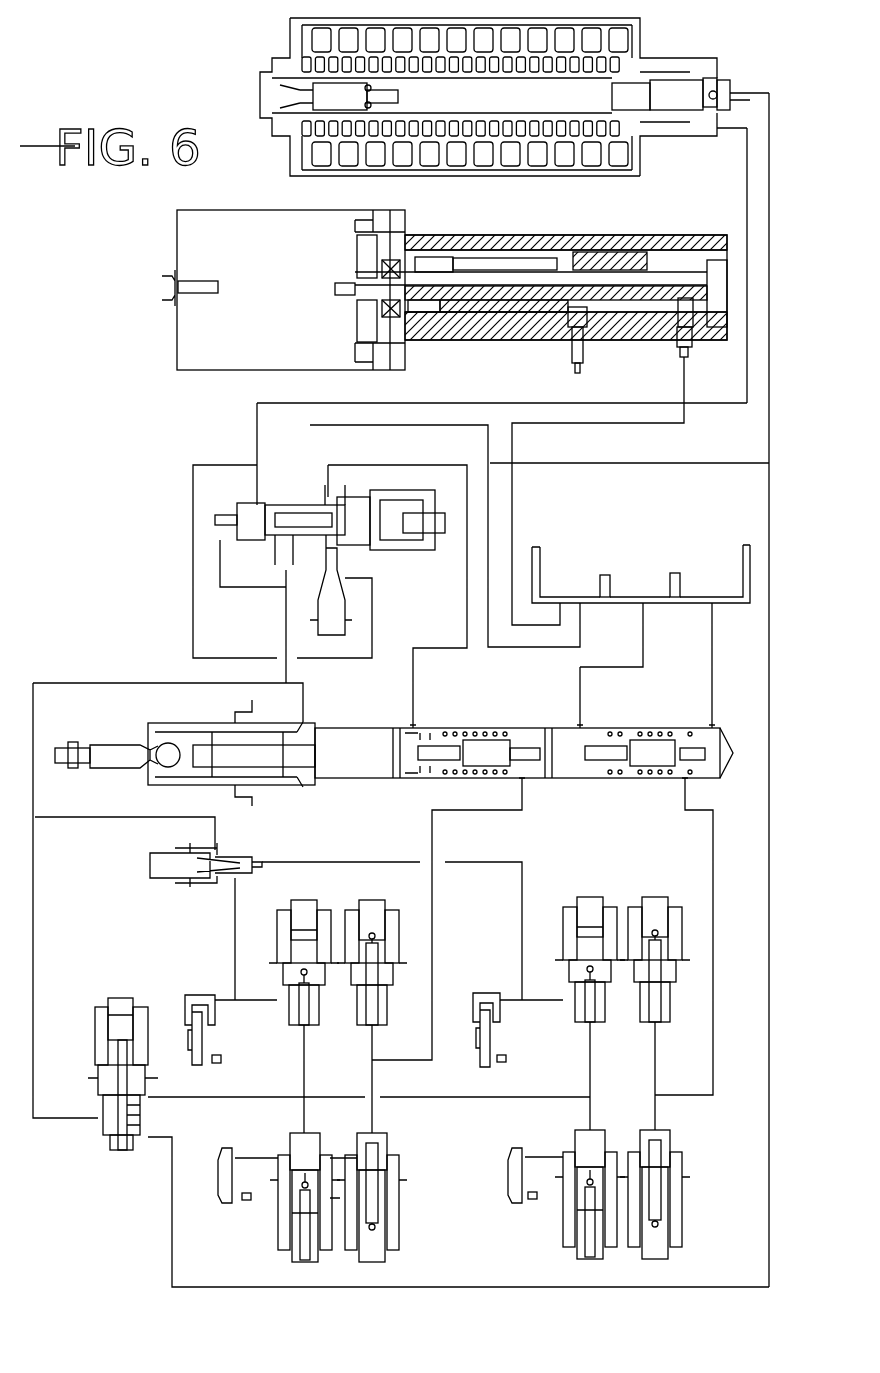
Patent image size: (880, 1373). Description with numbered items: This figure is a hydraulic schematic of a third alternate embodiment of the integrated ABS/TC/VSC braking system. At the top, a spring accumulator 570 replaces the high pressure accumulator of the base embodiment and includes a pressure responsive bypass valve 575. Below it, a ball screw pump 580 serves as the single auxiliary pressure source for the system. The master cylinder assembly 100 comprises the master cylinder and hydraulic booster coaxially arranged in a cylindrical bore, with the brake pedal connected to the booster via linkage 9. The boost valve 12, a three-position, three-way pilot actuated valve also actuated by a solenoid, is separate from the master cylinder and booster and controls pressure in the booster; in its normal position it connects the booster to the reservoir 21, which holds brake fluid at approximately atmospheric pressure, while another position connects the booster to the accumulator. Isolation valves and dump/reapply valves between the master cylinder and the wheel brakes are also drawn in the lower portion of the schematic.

The spring accumulator 570 is at (292, 44).
The pressure responsive bypass valve 575 is at (685, 55).
The ball screw pump 580 is at (596, 233).
The boost valve 12 is at (403, 553).
The reservoir 21 is at (532, 567).
The linkage 9 is at (113, 753).
The master cylinder assembly 100 is at (383, 779).